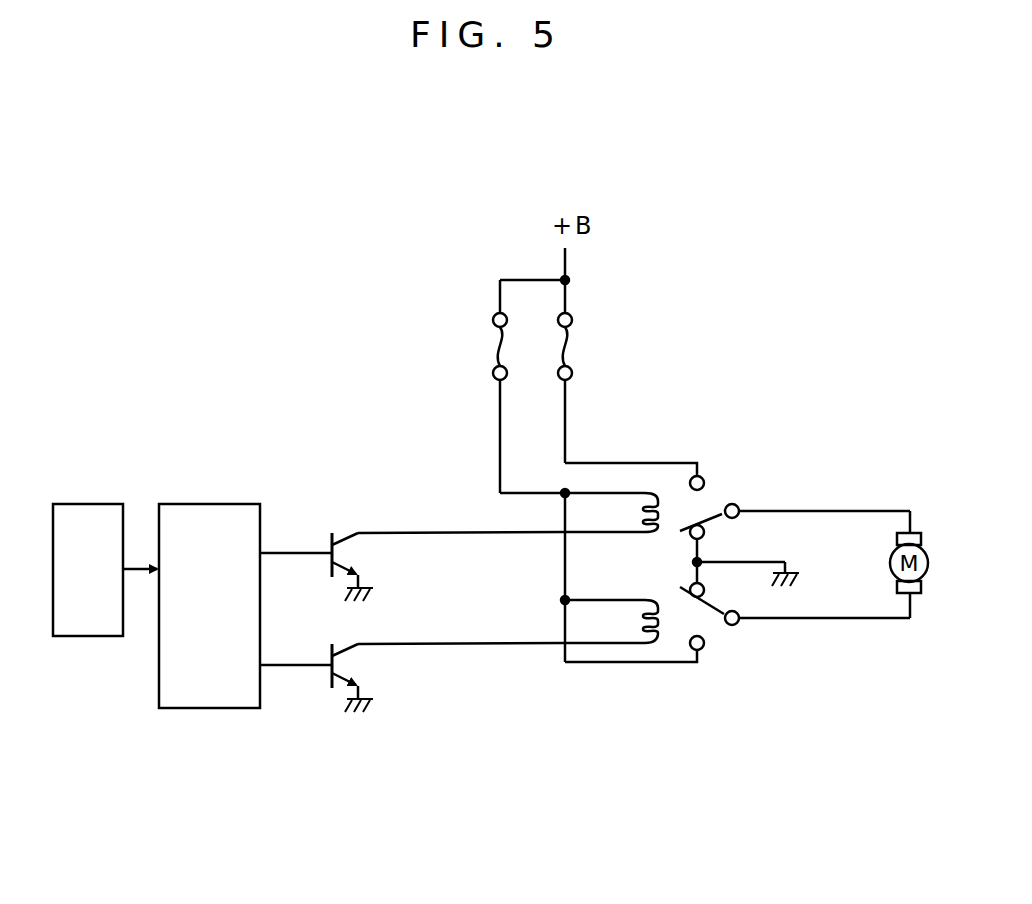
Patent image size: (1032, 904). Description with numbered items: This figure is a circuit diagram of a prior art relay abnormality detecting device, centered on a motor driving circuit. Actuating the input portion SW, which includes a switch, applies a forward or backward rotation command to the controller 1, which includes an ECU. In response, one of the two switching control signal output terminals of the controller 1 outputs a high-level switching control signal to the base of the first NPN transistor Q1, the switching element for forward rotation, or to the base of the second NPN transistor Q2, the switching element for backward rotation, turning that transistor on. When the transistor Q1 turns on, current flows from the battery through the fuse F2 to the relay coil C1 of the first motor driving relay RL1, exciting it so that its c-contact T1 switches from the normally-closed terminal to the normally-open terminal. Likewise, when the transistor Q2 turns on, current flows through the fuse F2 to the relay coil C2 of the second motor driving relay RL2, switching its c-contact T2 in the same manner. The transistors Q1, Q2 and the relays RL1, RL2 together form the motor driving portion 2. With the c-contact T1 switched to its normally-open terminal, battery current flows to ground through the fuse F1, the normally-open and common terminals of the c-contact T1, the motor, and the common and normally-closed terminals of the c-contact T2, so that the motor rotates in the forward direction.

The input portion SW is at (90, 503).
The controller 1 is at (199, 503).
The motor driving portion 2 is at (397, 456).
The fuse F1 is at (577, 342).
The fuse F2 is at (487, 342).
The relay coil C1 is at (622, 503).
The relay coil C2 is at (627, 627).
The first NPN transistor Q1 is at (363, 553).
The second NPN transistor Q2 is at (367, 666).
The first motor driving relay RL1 is at (785, 423).
The second motor driving relay RL2 is at (702, 712).
The c-contact T1 is at (718, 522).
The c-contact T2 is at (720, 633).